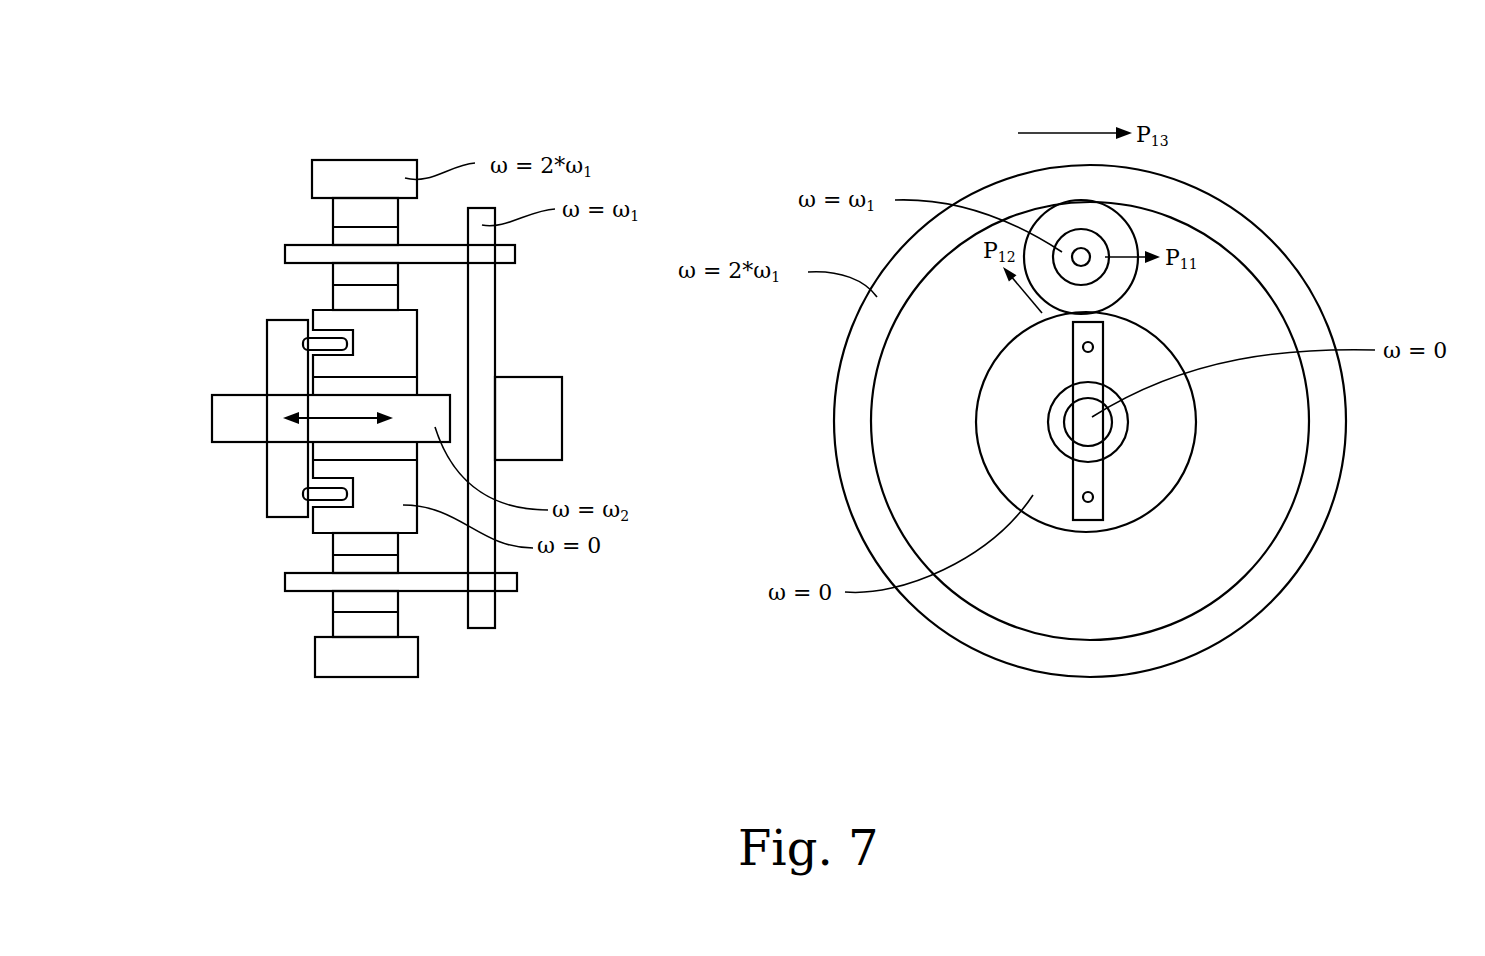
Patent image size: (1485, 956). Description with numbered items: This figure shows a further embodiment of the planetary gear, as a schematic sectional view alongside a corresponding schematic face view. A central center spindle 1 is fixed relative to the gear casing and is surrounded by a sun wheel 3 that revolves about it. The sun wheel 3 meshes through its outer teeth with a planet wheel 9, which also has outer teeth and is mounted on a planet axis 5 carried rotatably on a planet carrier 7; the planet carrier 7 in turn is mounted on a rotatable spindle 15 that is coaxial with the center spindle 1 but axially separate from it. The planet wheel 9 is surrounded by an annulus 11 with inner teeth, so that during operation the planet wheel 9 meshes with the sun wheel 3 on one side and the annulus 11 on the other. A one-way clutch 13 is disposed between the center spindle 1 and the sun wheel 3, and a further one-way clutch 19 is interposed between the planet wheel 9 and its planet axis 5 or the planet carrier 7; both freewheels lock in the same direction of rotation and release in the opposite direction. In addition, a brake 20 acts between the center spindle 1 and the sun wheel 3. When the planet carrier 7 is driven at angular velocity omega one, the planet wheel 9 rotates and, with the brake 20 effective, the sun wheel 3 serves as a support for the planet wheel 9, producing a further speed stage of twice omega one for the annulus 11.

The center spindle 1 is at (227, 418).
The sun wheel 3 is at (322, 317).
The planet axis 5 is at (297, 255).
The planet carrier 7 is at (482, 308).
The planet wheel 9 is at (343, 208).
The annulus 11 is at (330, 177).
The one-way clutch 13 is at (327, 452).
The rotatable spindle 15 is at (545, 420).
The one-way clutch 19 is at (340, 275).
The brake 20 is at (278, 495).